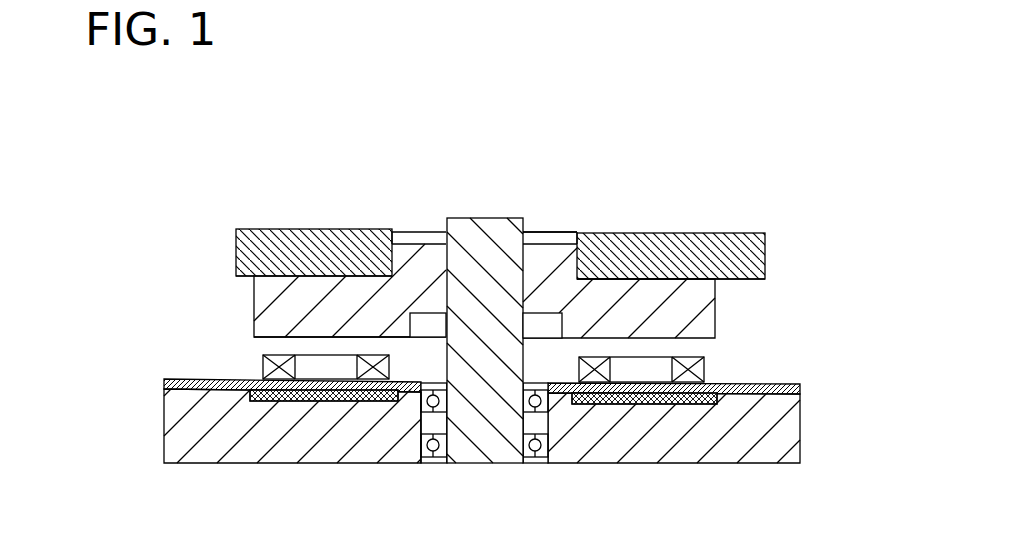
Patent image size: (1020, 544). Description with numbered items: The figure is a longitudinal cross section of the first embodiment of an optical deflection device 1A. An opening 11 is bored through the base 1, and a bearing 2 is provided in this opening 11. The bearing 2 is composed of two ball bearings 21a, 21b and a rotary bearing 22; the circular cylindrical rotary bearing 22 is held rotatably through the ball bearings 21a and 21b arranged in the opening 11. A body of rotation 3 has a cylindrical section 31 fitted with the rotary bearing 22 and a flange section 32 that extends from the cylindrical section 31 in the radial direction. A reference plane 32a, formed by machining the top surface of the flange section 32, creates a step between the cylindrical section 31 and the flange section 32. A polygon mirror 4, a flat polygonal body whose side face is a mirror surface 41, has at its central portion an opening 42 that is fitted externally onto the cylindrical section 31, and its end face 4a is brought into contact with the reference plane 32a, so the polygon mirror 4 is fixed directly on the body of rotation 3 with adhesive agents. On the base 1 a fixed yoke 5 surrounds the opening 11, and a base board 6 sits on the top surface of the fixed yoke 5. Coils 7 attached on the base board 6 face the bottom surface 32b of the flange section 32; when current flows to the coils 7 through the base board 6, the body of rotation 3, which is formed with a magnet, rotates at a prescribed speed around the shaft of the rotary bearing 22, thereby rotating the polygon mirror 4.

The base 1 is at (800, 428).
The optical deflection device 1A is at (591, 193).
The bearing 2 is at (458, 217).
The rotary bearing 22 is at (497, 218).
The body of rotation 3 is at (735, 315).
The cylindrical section 31 is at (421, 252).
The flange section 32 is at (255, 305).
The reference plane 32a is at (237, 271).
The bottom surface 32b is at (270, 338).
The polygon mirror 4 is at (686, 233).
The mirror surface 41 is at (236, 243).
The opening 42 is at (545, 232).
The end face 4a is at (677, 282).
The fixed yoke 5 is at (657, 404).
The base board 6 is at (800, 388).
The coils 7 is at (705, 371).
The opening 11 is at (533, 463).
The ball bearing 21a is at (410, 402).
The ball bearing 21b is at (432, 463).